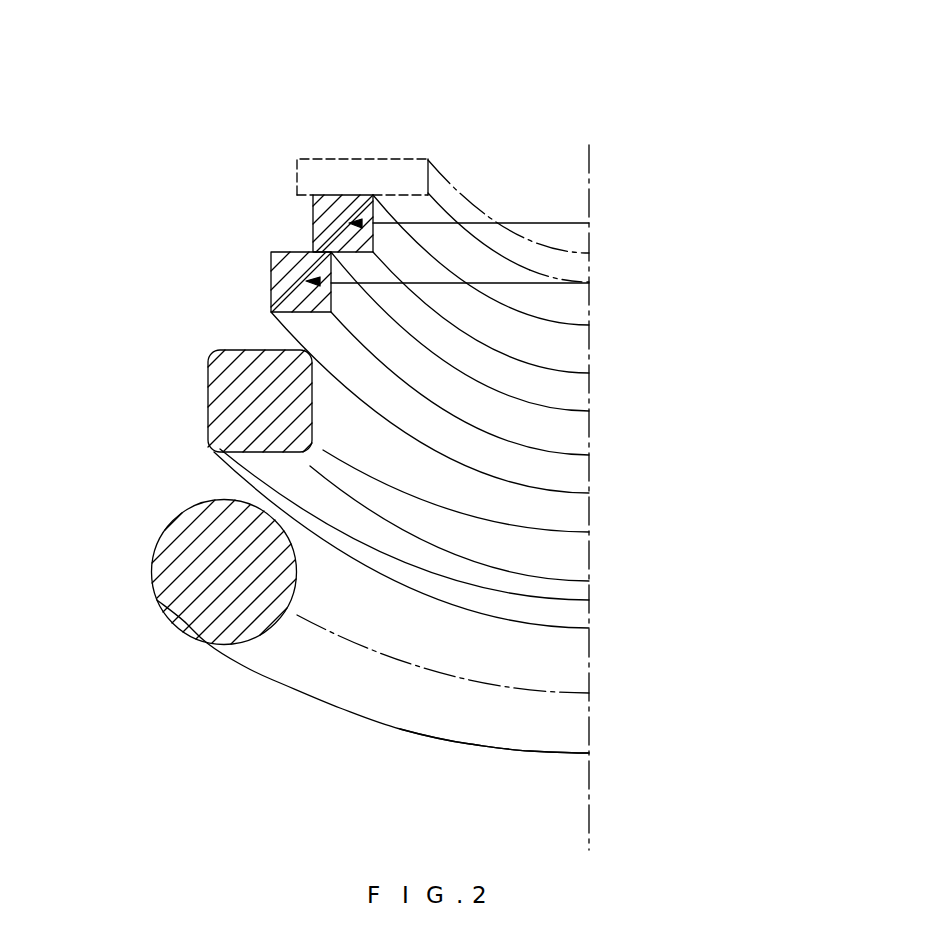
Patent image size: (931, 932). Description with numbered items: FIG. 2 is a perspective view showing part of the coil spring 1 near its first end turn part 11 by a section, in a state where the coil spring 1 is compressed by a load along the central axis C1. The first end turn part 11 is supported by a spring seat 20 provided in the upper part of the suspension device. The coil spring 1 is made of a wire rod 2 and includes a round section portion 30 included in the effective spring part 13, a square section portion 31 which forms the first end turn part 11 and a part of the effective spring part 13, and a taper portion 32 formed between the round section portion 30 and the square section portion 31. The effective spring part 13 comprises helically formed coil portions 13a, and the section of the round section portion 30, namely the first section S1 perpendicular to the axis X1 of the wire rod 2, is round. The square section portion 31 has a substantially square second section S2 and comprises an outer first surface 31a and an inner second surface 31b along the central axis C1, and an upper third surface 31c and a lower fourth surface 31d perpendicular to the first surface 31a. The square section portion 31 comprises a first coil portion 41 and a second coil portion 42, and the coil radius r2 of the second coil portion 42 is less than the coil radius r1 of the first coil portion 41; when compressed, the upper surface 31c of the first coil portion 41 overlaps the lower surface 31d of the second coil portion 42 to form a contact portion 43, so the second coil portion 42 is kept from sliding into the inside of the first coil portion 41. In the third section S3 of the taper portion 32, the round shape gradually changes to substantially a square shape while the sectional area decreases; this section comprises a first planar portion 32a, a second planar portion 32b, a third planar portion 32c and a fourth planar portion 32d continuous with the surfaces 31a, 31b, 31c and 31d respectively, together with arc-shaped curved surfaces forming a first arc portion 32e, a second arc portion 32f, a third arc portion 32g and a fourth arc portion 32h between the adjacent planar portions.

The coil spring 1 is at (527, 92).
The wire rod 2 is at (229, 661).
The first end turn part 11 is at (565, 324).
The effective spring part 13 is at (283, 718).
The coil portion 13a is at (165, 616).
The spring seat 20 is at (395, 158).
The round section portion 30 is at (507, 742).
The square section portion 31 is at (574, 398).
The first surface 31a is at (313, 215).
The second surface 31b is at (374, 197).
The third surface 31c is at (353, 195).
The fourth surface 31d is at (363, 257).
The taper portion 32 is at (574, 558).
The first planar portion 32a is at (209, 404).
The second planar portion 32b is at (313, 417).
The third planar portion 32c is at (244, 350).
The fourth planar portion 32d is at (252, 458).
The first arc portion 32e is at (209, 366).
The second arc portion 32f is at (210, 447).
The third arc portion 32g is at (313, 353).
The fourth arc portion 32h is at (307, 455).
The first coil portion 41 is at (283, 303).
The second coil portion 42 is at (330, 207).
The contact portion 43 is at (309, 252).
The central axis C1 is at (588, 485).
The coil radius of the first coil portion r1 is at (540, 280).
The coil radius of the second coil portion r2 is at (542, 223).
The first section S1 is at (158, 572).
The second section S2 is at (283, 270).
The third section S3 is at (209, 431).
The axis X1 is at (400, 668).